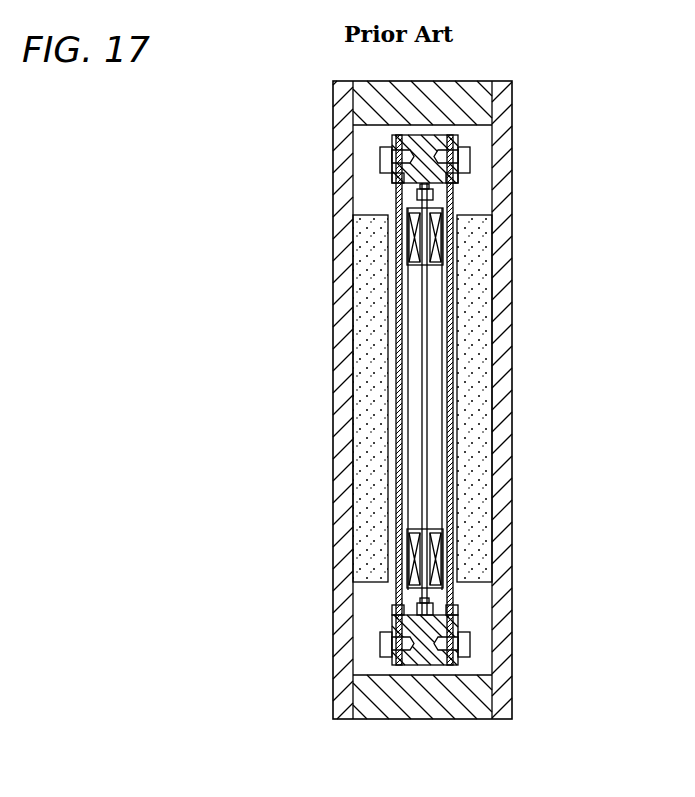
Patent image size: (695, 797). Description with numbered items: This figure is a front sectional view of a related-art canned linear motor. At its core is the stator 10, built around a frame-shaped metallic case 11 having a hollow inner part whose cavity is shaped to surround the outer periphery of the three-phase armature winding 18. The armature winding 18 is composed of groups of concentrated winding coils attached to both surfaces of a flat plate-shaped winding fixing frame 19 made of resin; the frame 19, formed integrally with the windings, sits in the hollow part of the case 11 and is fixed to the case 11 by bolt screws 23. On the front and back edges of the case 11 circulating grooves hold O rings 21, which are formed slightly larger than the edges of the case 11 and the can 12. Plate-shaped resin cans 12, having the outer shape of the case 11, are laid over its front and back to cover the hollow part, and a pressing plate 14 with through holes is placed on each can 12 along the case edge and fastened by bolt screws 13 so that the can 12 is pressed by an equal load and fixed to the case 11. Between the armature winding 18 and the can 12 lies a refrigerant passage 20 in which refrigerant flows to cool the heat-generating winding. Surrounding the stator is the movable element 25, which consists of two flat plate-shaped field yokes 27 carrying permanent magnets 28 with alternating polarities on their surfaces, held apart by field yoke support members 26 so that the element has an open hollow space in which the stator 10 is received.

The stator 10 is at (473, 151).
The case 11 is at (444, 140).
The can 12 is at (395, 341).
The bolt screw 13 is at (380, 160).
The pressing plate 14 is at (391, 188).
The armature winding 18 is at (437, 226).
The winding fixing frame 19 is at (427, 287).
The refrigerant passage 20 is at (443, 428).
The O ring 21 is at (457, 177).
The bolt screw 23 is at (400, 203).
The movable element 25 is at (513, 162).
The field yoke support member 26 is at (458, 702).
The field yoke 27 is at (503, 342).
The permanent magnet 28 is at (477, 356).